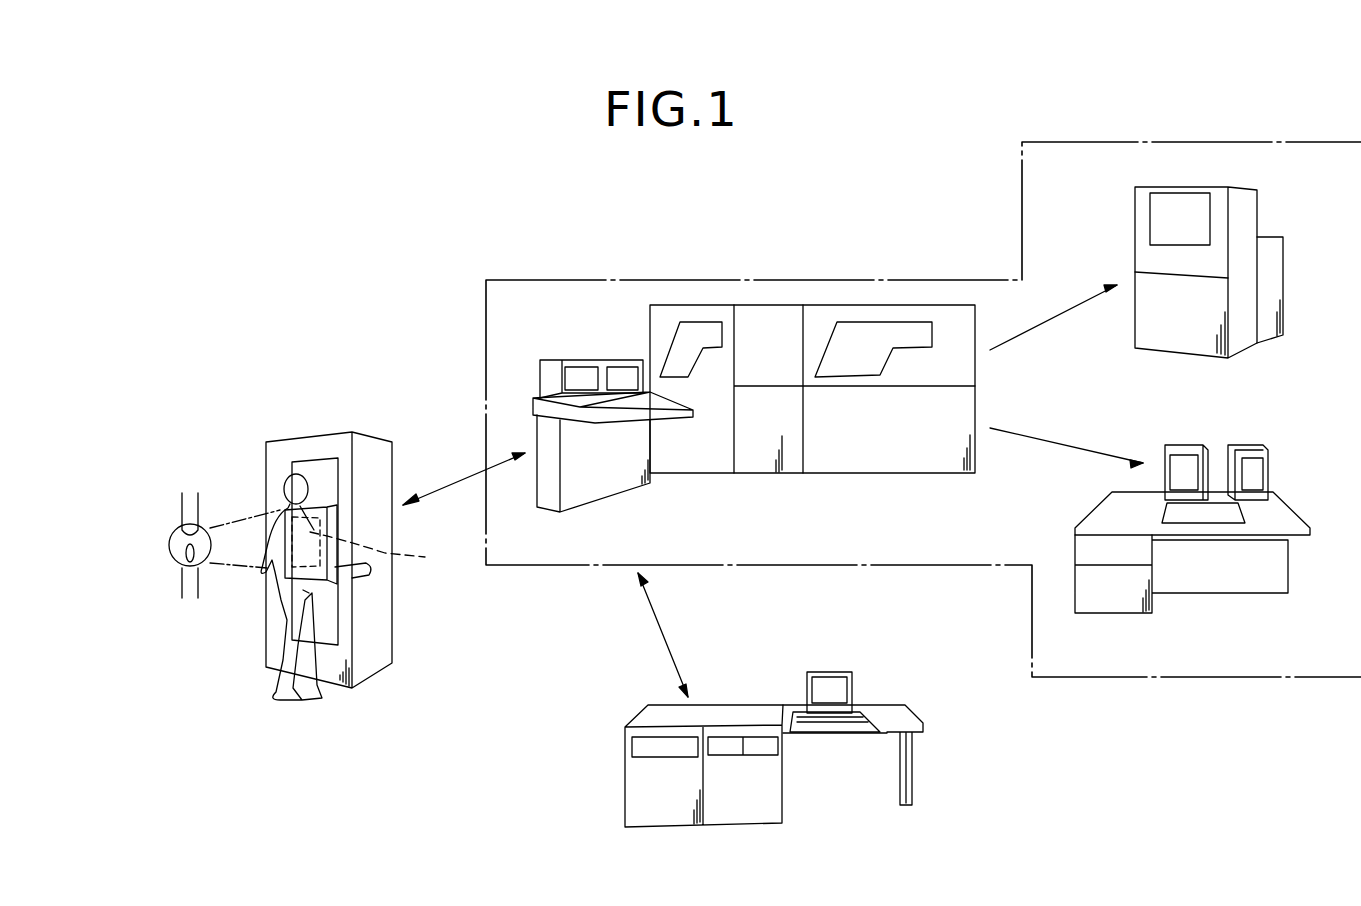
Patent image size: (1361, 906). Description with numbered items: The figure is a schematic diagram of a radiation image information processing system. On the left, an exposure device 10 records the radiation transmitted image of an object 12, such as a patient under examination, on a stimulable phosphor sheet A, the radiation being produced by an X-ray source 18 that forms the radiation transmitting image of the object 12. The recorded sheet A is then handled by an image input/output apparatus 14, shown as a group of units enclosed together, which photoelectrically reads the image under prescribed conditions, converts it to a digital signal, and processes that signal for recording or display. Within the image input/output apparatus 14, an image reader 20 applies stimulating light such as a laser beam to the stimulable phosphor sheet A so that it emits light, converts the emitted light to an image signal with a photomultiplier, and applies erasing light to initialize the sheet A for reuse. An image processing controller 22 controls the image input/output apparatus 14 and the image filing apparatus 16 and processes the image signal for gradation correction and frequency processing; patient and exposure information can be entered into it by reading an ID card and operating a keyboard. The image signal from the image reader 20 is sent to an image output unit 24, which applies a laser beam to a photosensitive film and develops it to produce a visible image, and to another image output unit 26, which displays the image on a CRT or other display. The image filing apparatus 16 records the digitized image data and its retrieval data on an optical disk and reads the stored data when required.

The exposure device 10 is at (320, 425).
The object 12 is at (278, 592).
The image input/output apparatus 14 is at (815, 265).
The image filing apparatus 16 is at (613, 733).
The X-ray source 18 is at (210, 528).
The image reader 20 is at (820, 482).
The image processing controller 22 is at (590, 352).
The image output unit 24 is at (1273, 218).
The image output unit 26 is at (1287, 485).
The stimulable phosphor sheet A is at (377, 550).